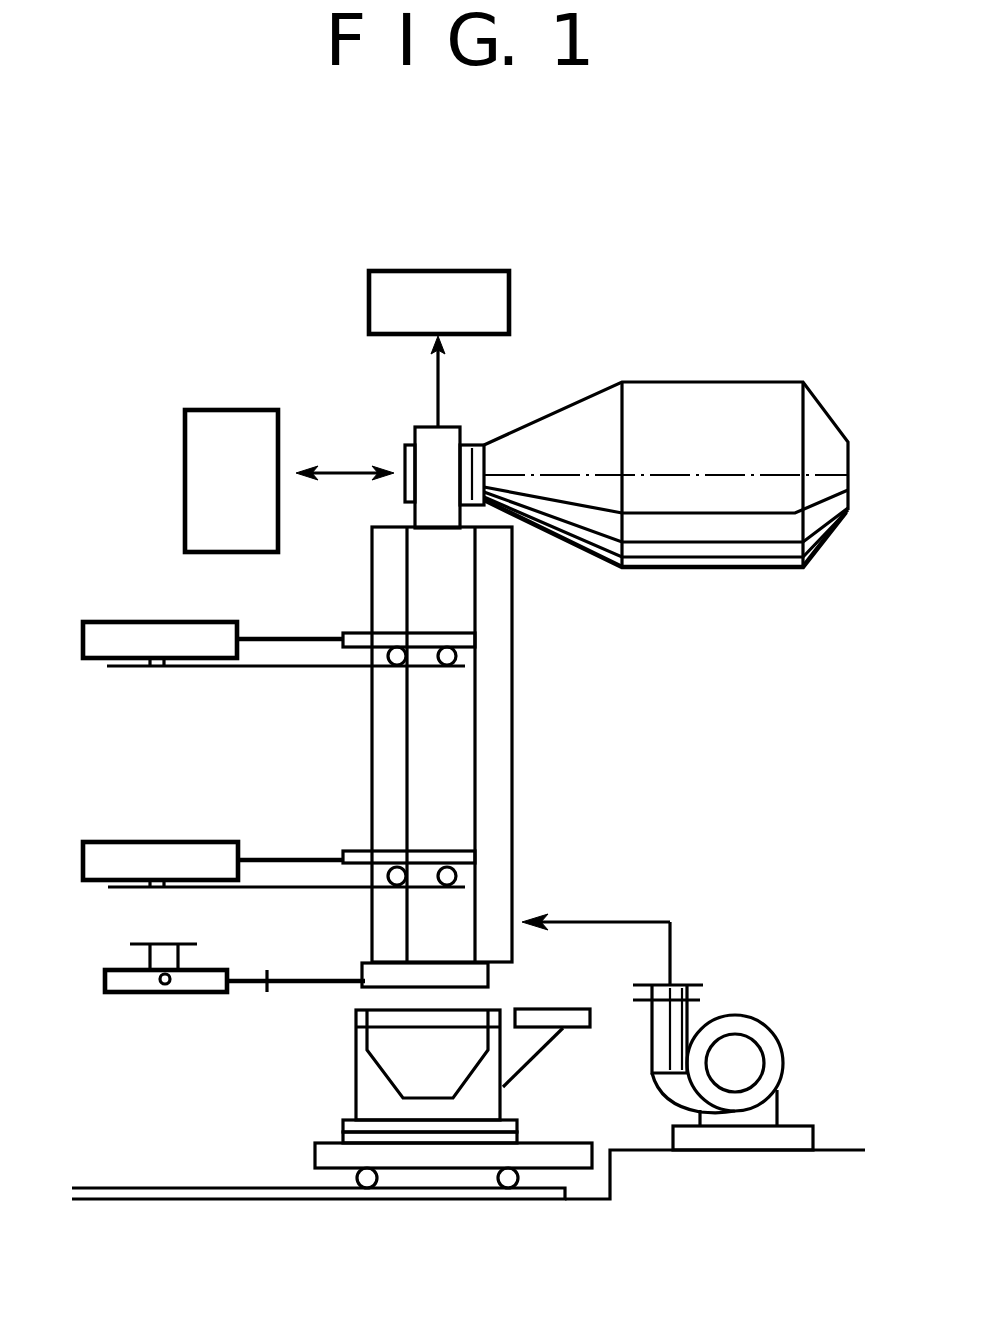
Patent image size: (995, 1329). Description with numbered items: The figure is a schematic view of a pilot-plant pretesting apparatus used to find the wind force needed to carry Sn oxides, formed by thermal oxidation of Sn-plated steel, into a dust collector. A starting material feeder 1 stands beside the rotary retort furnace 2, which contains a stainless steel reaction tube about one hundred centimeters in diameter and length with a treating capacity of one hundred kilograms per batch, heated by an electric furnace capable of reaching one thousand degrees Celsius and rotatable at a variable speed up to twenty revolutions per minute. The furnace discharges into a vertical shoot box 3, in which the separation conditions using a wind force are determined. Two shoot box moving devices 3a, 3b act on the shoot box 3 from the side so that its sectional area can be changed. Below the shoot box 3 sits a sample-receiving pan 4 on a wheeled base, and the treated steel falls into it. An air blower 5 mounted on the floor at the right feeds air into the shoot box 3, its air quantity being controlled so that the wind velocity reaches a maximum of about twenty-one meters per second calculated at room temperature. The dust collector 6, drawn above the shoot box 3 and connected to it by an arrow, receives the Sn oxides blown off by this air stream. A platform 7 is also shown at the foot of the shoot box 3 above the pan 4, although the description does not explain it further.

The starting material feeder 1 is at (233, 420).
The rotary retort furnace 2 is at (745, 390).
The shoot box 3 is at (497, 712).
The shoot box moving device 3a is at (122, 624).
The shoot box moving device 3b is at (122, 845).
The sample-receiving pan 4 is at (392, 1064).
The air blower 5 is at (762, 1040).
The dust collector 6 is at (484, 280).
The platform 7 is at (400, 978).